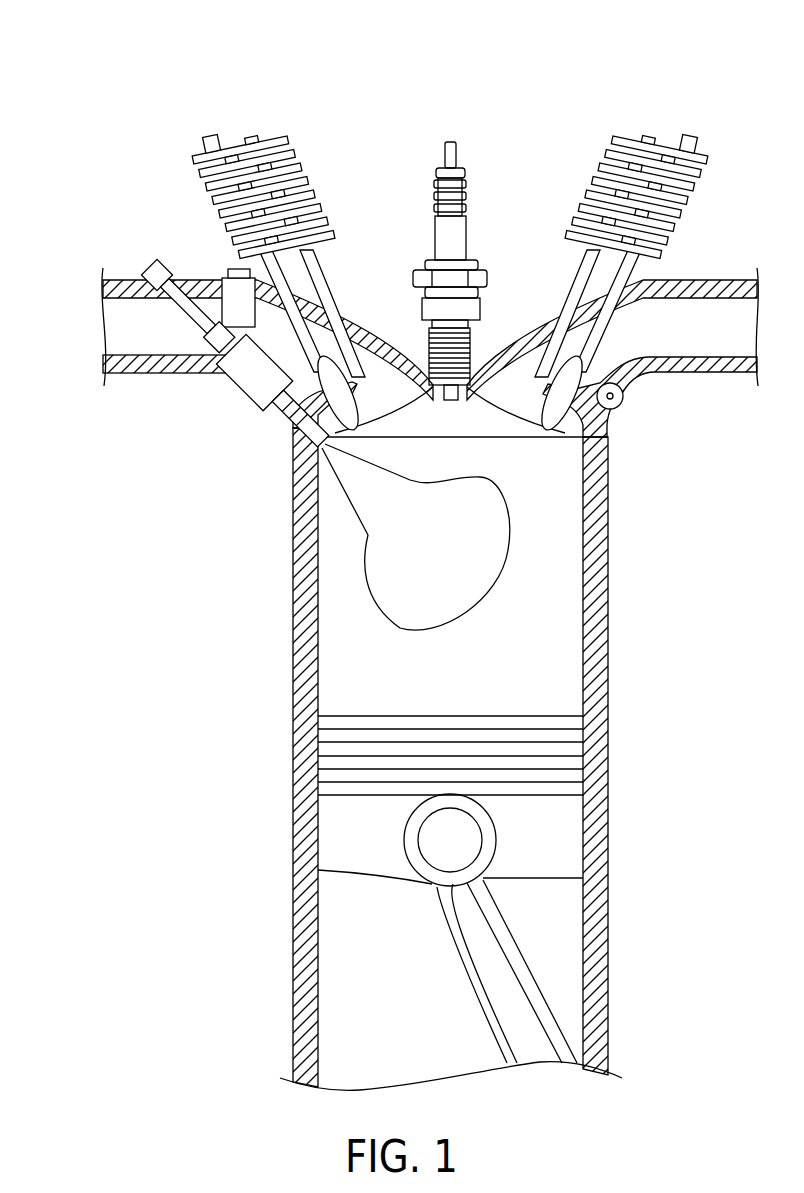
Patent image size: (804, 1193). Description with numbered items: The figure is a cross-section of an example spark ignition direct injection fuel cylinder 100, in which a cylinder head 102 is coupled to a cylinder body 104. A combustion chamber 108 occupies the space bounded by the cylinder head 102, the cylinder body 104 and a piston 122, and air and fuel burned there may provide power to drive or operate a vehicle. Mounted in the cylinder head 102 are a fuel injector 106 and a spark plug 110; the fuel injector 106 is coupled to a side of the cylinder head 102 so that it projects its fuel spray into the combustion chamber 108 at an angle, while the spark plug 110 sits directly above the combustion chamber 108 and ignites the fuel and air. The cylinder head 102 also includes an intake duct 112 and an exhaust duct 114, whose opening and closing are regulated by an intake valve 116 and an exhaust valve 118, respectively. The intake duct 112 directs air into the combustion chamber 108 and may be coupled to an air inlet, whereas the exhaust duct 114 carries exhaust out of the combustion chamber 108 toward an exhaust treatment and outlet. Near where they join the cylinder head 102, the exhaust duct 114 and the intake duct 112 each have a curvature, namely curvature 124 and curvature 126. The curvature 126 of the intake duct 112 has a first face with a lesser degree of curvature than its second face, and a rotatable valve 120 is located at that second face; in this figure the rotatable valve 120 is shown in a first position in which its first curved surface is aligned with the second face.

The spark ignition direct injection fuel cylinder 100 is at (94, 68).
The cylinder head 102 is at (76, 339).
The cylinder body 104 is at (292, 577).
The fuel injector 106 is at (215, 359).
The combustion chamber 108 is at (340, 656).
The spark plug 110 is at (452, 141).
The intake duct 112 is at (714, 299).
The exhaust duct 114 is at (137, 299).
The intake valve 116 is at (670, 133).
The exhaust valve 118 is at (233, 133).
The rotatable valve 120 is at (624, 399).
The piston 122 is at (560, 795).
The curvature of the exhaust duct 124 is at (241, 392).
The curvature of the intake duct 126 is at (660, 371).